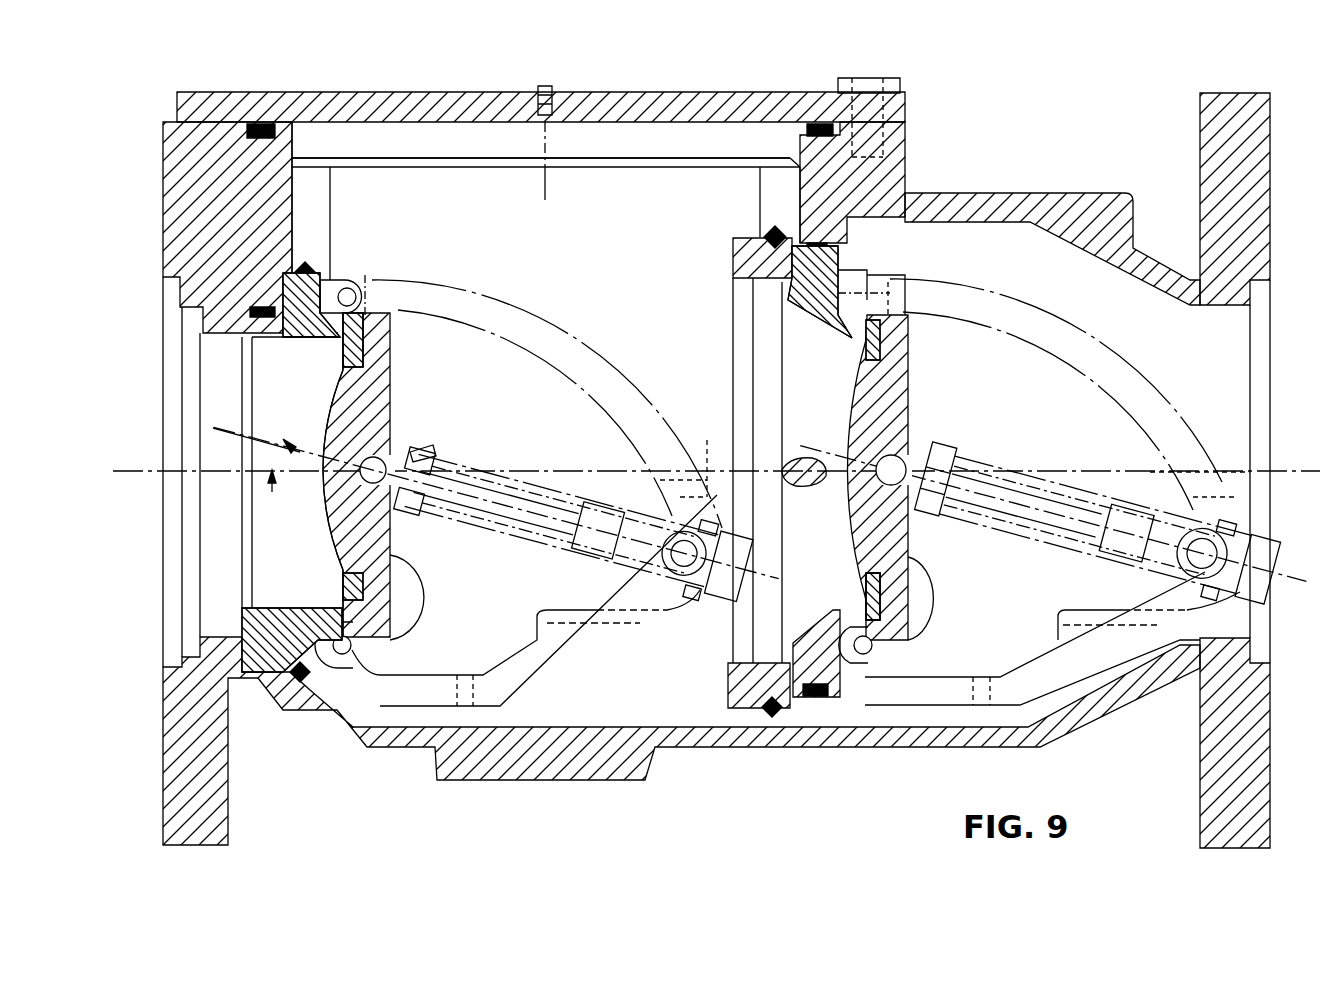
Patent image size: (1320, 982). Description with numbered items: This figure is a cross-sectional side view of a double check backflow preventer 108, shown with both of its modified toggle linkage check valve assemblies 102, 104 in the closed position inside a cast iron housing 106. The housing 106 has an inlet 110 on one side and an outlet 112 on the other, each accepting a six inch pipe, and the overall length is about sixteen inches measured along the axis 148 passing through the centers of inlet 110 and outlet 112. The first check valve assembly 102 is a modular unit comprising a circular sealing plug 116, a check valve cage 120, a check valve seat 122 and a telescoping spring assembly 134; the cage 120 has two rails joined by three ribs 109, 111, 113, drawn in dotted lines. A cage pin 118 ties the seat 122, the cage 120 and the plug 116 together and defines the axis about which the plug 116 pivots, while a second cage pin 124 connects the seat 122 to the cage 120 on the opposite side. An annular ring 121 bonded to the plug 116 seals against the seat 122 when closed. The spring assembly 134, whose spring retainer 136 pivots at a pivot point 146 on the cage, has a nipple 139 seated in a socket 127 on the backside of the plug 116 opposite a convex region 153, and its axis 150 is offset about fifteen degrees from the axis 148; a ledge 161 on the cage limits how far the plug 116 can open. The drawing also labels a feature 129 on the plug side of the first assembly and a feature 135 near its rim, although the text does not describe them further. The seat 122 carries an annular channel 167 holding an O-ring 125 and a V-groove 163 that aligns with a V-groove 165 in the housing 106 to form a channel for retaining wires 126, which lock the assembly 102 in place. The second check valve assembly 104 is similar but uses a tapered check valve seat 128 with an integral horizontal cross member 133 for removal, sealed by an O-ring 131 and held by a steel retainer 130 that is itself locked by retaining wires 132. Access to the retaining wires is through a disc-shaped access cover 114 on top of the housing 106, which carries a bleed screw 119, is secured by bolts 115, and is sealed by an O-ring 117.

The check valve assembly 102 is at (556, 297).
The check valve assembly 104 is at (981, 276).
The housing 106 is at (1020, 193).
The double check backflow preventer 108 is at (1014, 112).
The rib 109 is at (471, 675).
The inlet 110 is at (178, 425).
The rib 111 is at (582, 623).
The outlet 112 is at (1258, 418).
The rib 113 is at (706, 440).
The access cover 114 is at (738, 93).
The bolt 115 is at (895, 80).
The sealing plug 116 is at (376, 340).
The O-ring 117 is at (792, 125).
The cage pin 118 is at (356, 648).
The bleed screw 119 is at (538, 88).
The check valve cage 120 is at (617, 380).
The annular ring 121 is at (374, 372).
The check valve seat 122 is at (290, 618).
The cage pin 124 is at (356, 292).
The O-ring 125 is at (262, 310).
The retaining wire 126 is at (308, 266).
The socket 127 is at (380, 456).
The check valve seat 128 is at (810, 640).
The disc face 129 is at (331, 510).
The retainer 130 is at (745, 258).
The O-ring 131 is at (813, 698).
The retaining wire 132 is at (768, 232).
The cross member 133 is at (803, 487).
The telescoping spring assembly 134 is at (528, 460).
The disc rim 135 is at (391, 398).
The spring retainer 136 is at (718, 582).
The nipple 139 is at (430, 455).
The pivot point 146 is at (662, 530).
The axis 148 is at (130, 480).
The axis 150 is at (300, 422).
The convex region 153 is at (333, 393).
The ledge 161 is at (573, 603).
The V-groove 163 is at (316, 290).
The V-groove 165 is at (303, 266).
The annular channel 167 is at (296, 354).